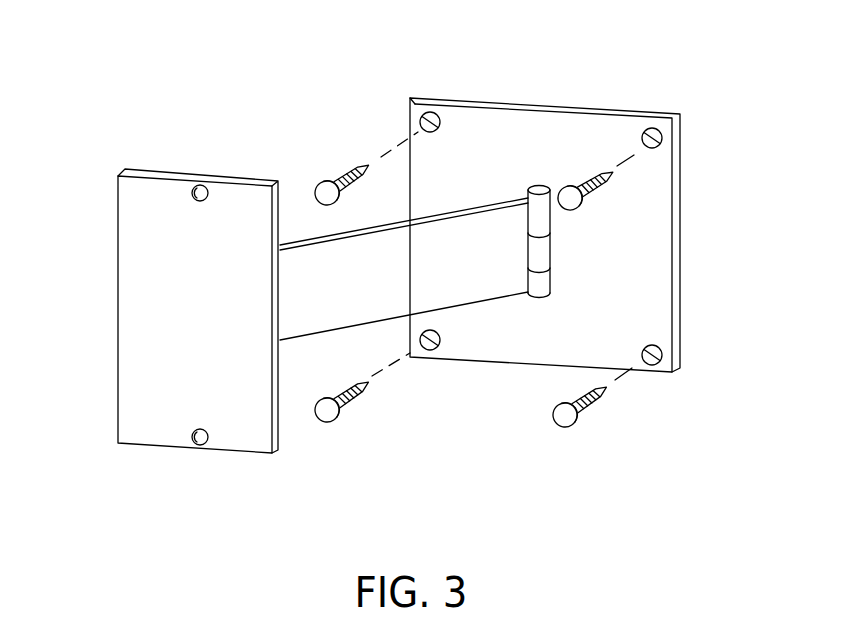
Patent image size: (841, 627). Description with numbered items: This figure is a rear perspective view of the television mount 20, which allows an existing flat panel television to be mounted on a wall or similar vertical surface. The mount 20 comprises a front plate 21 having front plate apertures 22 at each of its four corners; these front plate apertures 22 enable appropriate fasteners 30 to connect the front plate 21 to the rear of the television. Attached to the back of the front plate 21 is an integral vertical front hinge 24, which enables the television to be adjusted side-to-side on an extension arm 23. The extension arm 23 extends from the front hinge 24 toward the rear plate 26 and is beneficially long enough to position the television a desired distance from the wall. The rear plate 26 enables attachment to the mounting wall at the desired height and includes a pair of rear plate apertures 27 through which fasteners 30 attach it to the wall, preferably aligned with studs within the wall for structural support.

The television mount 20 is at (132, 71).
The front plate 21 is at (493, 123).
The front plate apertures 22 is at (432, 112).
The extension arm 23 is at (322, 257).
The front hinge 24 is at (540, 247).
The rear plate 26 is at (138, 315).
The rear plate apertures 27 is at (195, 191).
The fasteners 30 is at (353, 170).